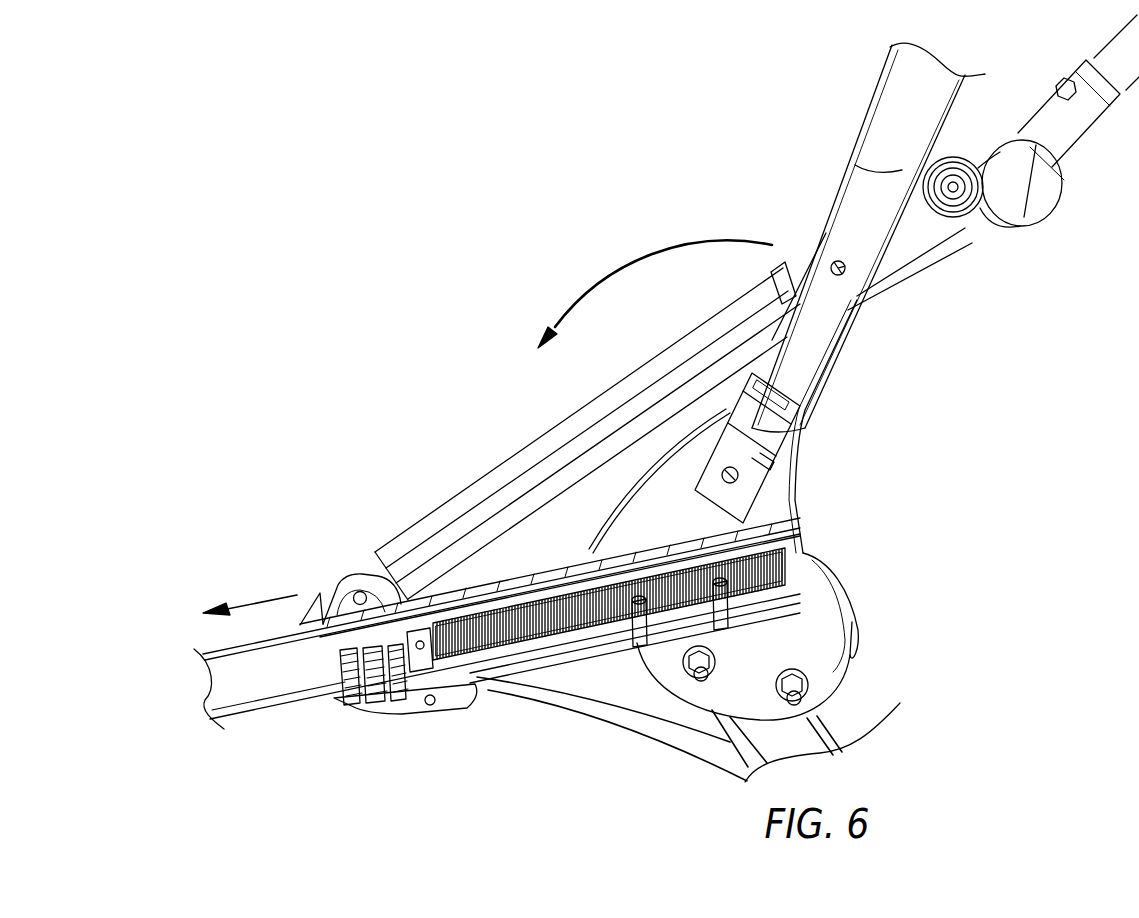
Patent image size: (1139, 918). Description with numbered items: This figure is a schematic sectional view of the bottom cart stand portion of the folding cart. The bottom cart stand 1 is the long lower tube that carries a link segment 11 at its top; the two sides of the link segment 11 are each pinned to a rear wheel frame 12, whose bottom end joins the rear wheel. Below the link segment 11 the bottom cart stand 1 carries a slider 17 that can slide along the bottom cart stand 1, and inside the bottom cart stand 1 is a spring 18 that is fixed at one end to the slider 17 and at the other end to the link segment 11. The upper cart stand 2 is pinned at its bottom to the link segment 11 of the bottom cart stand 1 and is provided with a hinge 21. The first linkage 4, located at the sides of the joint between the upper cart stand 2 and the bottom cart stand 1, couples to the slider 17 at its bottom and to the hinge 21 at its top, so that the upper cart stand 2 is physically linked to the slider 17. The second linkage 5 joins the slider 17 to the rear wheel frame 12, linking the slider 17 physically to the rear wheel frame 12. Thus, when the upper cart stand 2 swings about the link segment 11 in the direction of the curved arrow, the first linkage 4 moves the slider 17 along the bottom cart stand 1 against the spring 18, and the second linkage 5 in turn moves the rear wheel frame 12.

The bottom cart stand 1 is at (280, 708).
The upper cart stand 2 is at (842, 336).
The first linkage 4 is at (502, 483).
The second linkage 5 is at (587, 710).
The link segment 11 is at (823, 577).
The rear wheel frame 12 is at (847, 720).
The slider 17 is at (447, 697).
The spring 18 is at (518, 640).
The hinge 21 is at (845, 268).